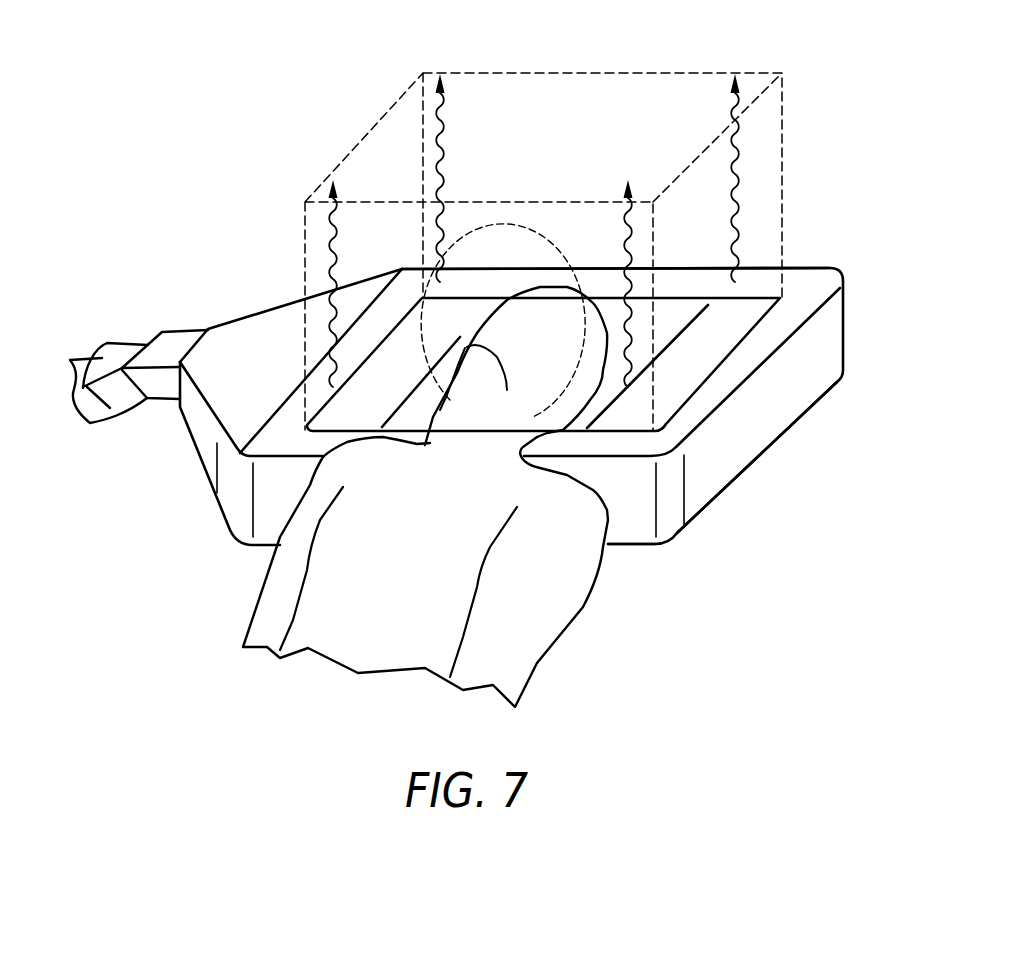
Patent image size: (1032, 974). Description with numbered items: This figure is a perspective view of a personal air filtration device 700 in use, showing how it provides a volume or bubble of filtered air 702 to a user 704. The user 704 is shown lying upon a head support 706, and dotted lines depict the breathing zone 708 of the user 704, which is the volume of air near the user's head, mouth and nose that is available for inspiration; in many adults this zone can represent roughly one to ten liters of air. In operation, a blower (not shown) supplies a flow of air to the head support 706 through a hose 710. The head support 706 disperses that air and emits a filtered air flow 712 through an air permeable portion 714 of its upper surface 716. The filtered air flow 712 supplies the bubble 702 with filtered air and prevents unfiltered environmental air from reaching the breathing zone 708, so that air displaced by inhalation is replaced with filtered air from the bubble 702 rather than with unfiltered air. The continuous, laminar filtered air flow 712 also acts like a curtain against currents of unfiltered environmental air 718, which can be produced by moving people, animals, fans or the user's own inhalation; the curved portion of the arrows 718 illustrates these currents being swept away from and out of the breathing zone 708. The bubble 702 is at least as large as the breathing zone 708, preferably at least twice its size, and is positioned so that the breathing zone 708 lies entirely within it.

The personal air filtration device 700 is at (852, 328).
The bubble of filtered air 702 is at (590, 72).
The user 704 is at (547, 605).
The head support 706 is at (232, 505).
The breathing zone 708 is at (565, 345).
The hose 710 is at (108, 363).
The filtered air flow 712 is at (534, 230).
The air permeable portion 714 is at (707, 350).
The upper surface 716 is at (795, 278).
The currents of unfiltered environmental air 718 is at (368, 215).